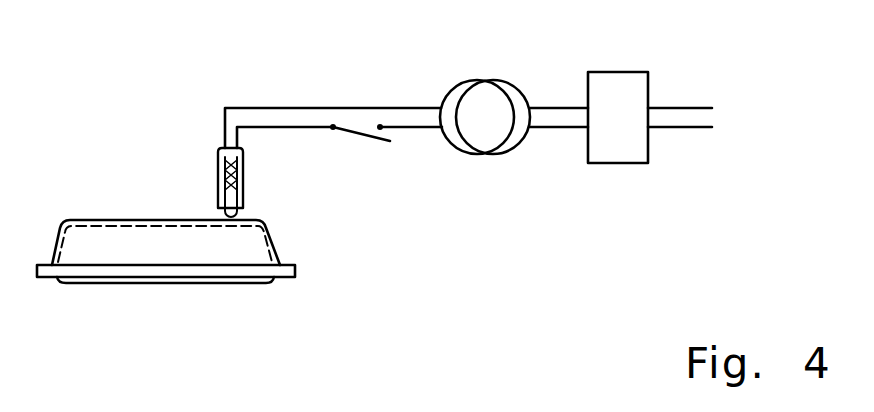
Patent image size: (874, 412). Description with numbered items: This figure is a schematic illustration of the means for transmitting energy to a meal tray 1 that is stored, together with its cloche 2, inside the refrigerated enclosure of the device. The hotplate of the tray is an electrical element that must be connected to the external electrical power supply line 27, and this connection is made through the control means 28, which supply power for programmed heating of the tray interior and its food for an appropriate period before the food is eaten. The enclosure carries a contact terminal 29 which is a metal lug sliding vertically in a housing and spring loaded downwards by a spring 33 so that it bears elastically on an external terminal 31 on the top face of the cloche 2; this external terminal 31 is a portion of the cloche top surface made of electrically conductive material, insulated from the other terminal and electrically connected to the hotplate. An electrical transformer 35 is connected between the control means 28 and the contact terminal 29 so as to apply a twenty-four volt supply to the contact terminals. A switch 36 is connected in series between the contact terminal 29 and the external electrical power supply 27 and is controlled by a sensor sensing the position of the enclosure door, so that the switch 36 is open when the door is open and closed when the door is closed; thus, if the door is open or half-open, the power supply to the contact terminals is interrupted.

The meal tray 1 is at (95, 282).
The cloche 2 is at (73, 218).
The electrical power supply line 27 is at (697, 108).
The control means 28 is at (594, 85).
The contact terminal 29 is at (218, 218).
The external terminal 31 is at (249, 218).
The spring 33 is at (218, 173).
The electrical transformer 35 is at (464, 84).
The switch 36 is at (357, 132).